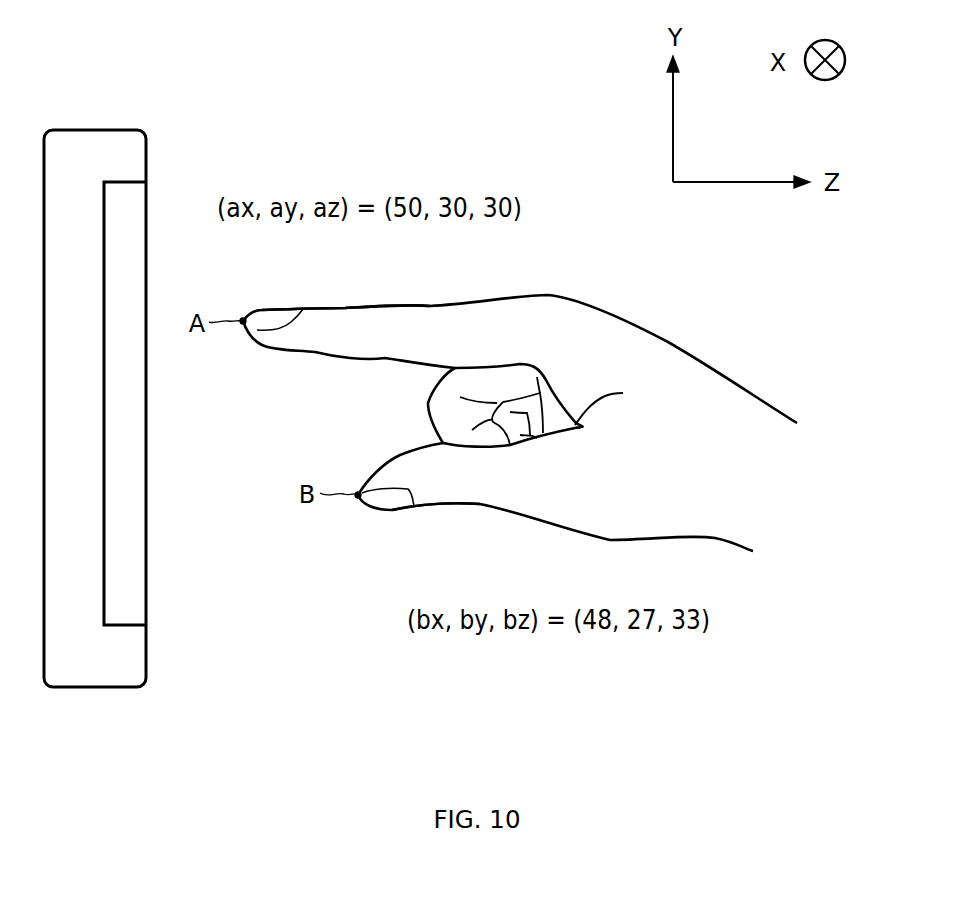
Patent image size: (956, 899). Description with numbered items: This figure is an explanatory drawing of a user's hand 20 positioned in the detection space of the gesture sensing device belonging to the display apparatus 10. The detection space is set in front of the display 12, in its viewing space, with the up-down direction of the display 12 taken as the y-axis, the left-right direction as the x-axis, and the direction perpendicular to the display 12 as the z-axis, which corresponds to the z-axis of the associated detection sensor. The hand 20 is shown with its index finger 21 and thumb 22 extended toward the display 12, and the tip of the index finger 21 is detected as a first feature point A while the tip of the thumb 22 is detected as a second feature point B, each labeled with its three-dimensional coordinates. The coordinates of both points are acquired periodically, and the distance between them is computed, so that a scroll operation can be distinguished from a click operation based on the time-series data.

The display apparatus 10 is at (97, 129).
The display 12 is at (147, 218).
The user's hand 20 is at (668, 342).
The index finger 21 is at (343, 318).
The thumb 22 is at (447, 487).